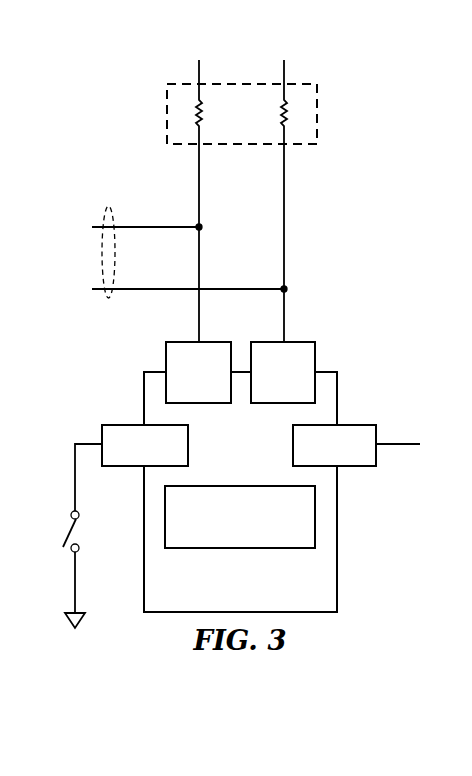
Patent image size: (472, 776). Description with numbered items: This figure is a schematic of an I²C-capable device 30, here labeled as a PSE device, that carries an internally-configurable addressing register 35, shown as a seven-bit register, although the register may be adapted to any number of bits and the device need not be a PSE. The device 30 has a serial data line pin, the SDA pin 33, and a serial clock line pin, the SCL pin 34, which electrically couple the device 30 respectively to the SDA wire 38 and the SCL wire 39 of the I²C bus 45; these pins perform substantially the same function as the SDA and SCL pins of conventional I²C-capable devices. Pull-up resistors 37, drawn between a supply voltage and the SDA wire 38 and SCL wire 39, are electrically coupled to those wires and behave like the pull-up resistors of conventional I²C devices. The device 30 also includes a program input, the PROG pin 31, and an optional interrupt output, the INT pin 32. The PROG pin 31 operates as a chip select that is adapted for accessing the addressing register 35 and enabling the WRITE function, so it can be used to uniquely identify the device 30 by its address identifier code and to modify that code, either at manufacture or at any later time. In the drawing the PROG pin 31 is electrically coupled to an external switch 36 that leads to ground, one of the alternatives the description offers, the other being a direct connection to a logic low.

The I²C-capable device 30 is at (91, 58).
The PROG pin 31 is at (128, 468).
The INT pin 32 is at (351, 468).
The SDA pin 33 is at (316, 357).
The SCL pin 34 is at (165, 357).
The addressing register 35 is at (240, 550).
The external switch 36 is at (63, 538).
The pull-up resistors 37 is at (324, 102).
The SDA wire 38 is at (157, 289).
The SCL wire 39 is at (157, 227).
The I²C bus 45 is at (108, 206).